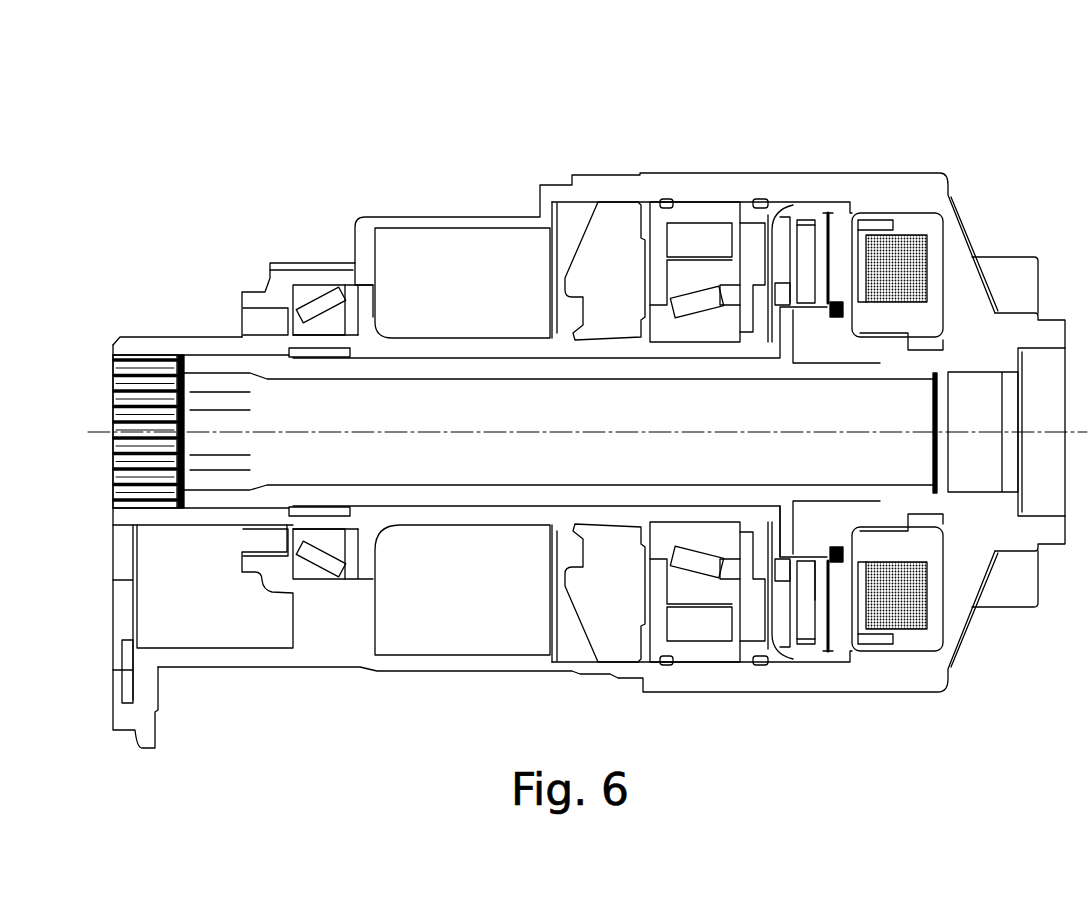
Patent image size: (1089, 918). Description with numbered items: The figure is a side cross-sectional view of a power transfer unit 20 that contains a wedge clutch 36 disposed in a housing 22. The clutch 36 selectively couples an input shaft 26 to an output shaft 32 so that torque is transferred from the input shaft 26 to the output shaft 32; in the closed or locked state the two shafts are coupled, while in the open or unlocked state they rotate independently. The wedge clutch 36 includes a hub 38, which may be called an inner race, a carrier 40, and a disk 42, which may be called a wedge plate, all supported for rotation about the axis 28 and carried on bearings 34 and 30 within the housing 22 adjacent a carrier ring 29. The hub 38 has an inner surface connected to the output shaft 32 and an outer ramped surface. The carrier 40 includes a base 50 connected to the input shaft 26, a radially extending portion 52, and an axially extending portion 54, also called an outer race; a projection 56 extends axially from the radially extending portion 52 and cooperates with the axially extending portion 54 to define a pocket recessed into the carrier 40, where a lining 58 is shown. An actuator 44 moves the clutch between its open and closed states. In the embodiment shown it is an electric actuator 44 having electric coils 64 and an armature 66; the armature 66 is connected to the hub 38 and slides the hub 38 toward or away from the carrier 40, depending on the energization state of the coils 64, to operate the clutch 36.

The drive unit 20 is at (797, 88).
The housing 22 is at (483, 215).
The input shaft 26 is at (370, 325).
The axis 28 is at (96, 422).
The brake carrier ring 29 is at (625, 218).
The rotor hub 30 is at (702, 262).
The output shaft 32 is at (190, 345).
The tapered roller bearing 34 is at (298, 307).
The wedge clutch 36 is at (845, 200).
The hub 38 is at (820, 345).
The carrier 40 is at (781, 250).
The disk 42 is at (836, 215).
The actuator 44 is at (923, 647).
The base 50 is at (712, 290).
The radially extending portion 52 is at (781, 607).
The axially extending portion 54 is at (800, 645).
The projection 56 is at (790, 572).
The friction lining 58 is at (827, 642).
The electric coils 64 is at (927, 617).
The armature 66 is at (893, 255).